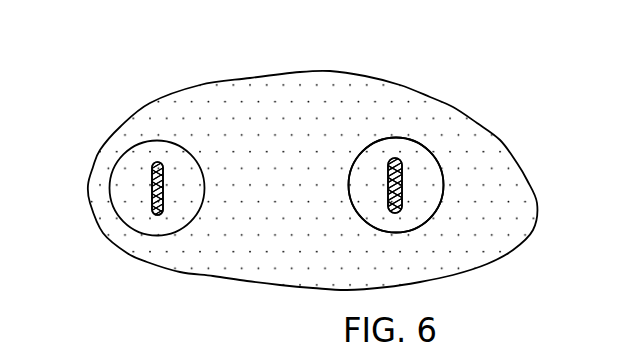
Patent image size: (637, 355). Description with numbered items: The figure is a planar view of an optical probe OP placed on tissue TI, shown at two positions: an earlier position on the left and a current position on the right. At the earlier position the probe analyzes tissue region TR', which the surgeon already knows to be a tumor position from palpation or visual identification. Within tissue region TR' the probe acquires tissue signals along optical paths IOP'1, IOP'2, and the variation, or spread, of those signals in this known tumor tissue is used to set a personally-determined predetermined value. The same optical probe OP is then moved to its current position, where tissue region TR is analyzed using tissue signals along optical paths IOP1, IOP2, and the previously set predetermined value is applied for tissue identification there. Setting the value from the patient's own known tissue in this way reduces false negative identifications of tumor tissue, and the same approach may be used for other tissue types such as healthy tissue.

The tissue TI is at (400, 85).
The optical probe OP is at (441, 173).
The tissue region TR is at (458, 185).
The optical path IOP1 is at (403, 193).
The optical path IOP2 is at (402, 168).
The tissue region TR' is at (113, 188).
The optical path IOP'1 is at (107, 152).
The optical path IOP'2 is at (96, 166).